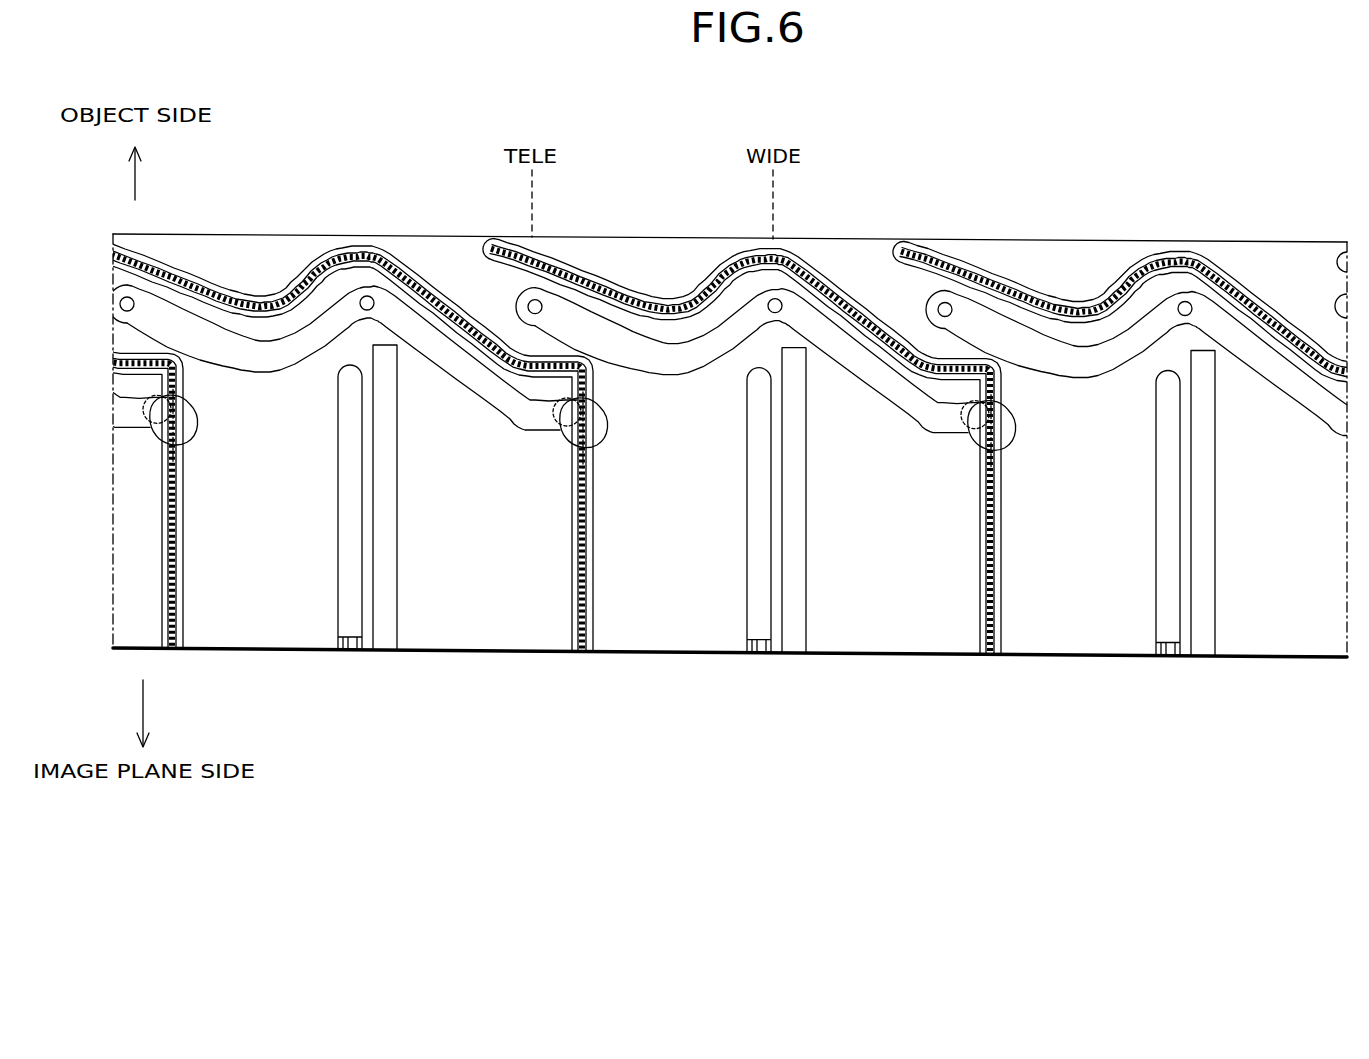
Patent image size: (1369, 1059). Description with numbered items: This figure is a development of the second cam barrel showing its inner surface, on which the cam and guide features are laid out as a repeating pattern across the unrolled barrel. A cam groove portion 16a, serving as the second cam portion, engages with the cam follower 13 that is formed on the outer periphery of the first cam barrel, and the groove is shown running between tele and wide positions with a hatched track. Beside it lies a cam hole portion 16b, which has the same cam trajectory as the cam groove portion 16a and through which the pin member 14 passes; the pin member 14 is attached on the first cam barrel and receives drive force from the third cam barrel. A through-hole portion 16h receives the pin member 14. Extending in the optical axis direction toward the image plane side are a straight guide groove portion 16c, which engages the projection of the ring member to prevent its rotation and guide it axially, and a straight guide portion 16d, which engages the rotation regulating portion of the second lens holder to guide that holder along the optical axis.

The cam follower 13 is at (788, 250).
The pin member 14 is at (963, 435).
The cam groove portion 16a is at (205, 291).
The cam hole portion 16b is at (275, 373).
The straight guide groove portion 16c is at (393, 618).
The straight guide portion 16d is at (343, 607).
The through-hole portion 16h is at (197, 440).